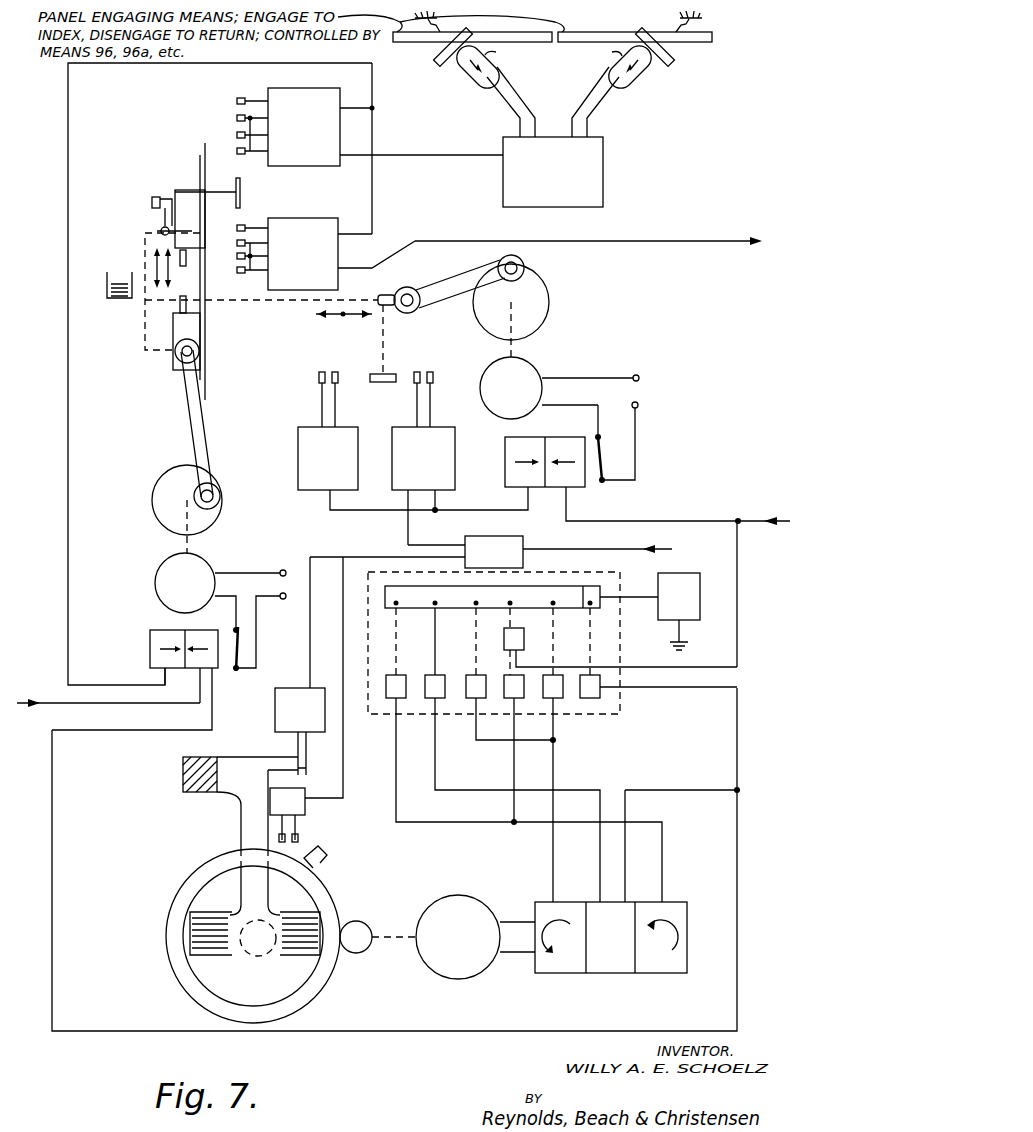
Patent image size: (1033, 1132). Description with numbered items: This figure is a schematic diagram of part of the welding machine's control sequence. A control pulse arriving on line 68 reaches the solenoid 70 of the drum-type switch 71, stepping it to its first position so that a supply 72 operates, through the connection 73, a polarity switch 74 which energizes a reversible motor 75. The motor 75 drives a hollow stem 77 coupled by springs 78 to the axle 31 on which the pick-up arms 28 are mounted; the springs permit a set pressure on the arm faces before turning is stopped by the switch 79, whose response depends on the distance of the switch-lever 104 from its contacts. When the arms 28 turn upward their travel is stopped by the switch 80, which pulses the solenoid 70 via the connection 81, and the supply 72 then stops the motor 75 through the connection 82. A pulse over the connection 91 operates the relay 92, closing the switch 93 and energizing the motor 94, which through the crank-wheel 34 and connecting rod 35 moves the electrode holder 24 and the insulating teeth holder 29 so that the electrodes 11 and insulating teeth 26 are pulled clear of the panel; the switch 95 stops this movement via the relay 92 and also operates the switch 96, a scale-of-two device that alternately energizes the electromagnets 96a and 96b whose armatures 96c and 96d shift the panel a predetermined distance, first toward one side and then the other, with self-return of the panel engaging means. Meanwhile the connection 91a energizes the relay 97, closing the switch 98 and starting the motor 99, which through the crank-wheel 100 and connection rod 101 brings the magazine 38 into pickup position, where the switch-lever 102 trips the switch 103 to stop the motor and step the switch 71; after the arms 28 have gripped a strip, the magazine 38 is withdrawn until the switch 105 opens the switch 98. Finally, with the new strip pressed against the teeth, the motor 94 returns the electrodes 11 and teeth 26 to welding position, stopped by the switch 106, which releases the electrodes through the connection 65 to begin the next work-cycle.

The electrodes 11 is at (180, 308).
The electrode holder 24 is at (175, 350).
The insulating teeth 26 is at (187, 259).
The pick-up arms 28 is at (150, 204).
The insulating teeth holder 29 is at (190, 192).
The axle 31 is at (255, 952).
The crank-wheel 34 is at (165, 488).
The connecting rod 35 is at (192, 421).
The magazine 38 is at (118, 280).
The connection 65 is at (622, 243).
The line 68 is at (656, 553).
The solenoid 70 is at (497, 545).
The drum-type switch 71 is at (603, 652).
The supply 72 is at (680, 578).
The connection 73 is at (476, 822).
The polarity switch 74 is at (608, 970).
The reversible motor 75 is at (440, 968).
The hollow stem 77 is at (318, 978).
The springs 78 is at (210, 925).
The switch 79 is at (303, 808).
The switch 80 is at (283, 710).
The connection 81 is at (394, 556).
The connection 82 is at (576, 790).
The connection 91 is at (55, 702).
The connection 91a is at (696, 522).
The relay 92 is at (151, 648).
The switch 93 is at (246, 648).
The motor 94 is at (163, 583).
The switch 95 is at (286, 92).
The switch 96 is at (603, 152).
The electromagnet 96a is at (622, 90).
The electromagnet 96b is at (473, 86).
The armature 96c is at (718, 64).
The armature 96d is at (430, 64).
The relay 97 is at (581, 487).
The switch 98 is at (607, 448).
The motor 99 is at (530, 366).
The crank-wheel 100 is at (547, 297).
The connection rod 101 is at (441, 288).
The switch-lever 102 is at (390, 372).
The switch 103 is at (445, 460).
The switch-lever 104 is at (325, 856).
The switch 105 is at (312, 443).
The switch 106 is at (300, 228).